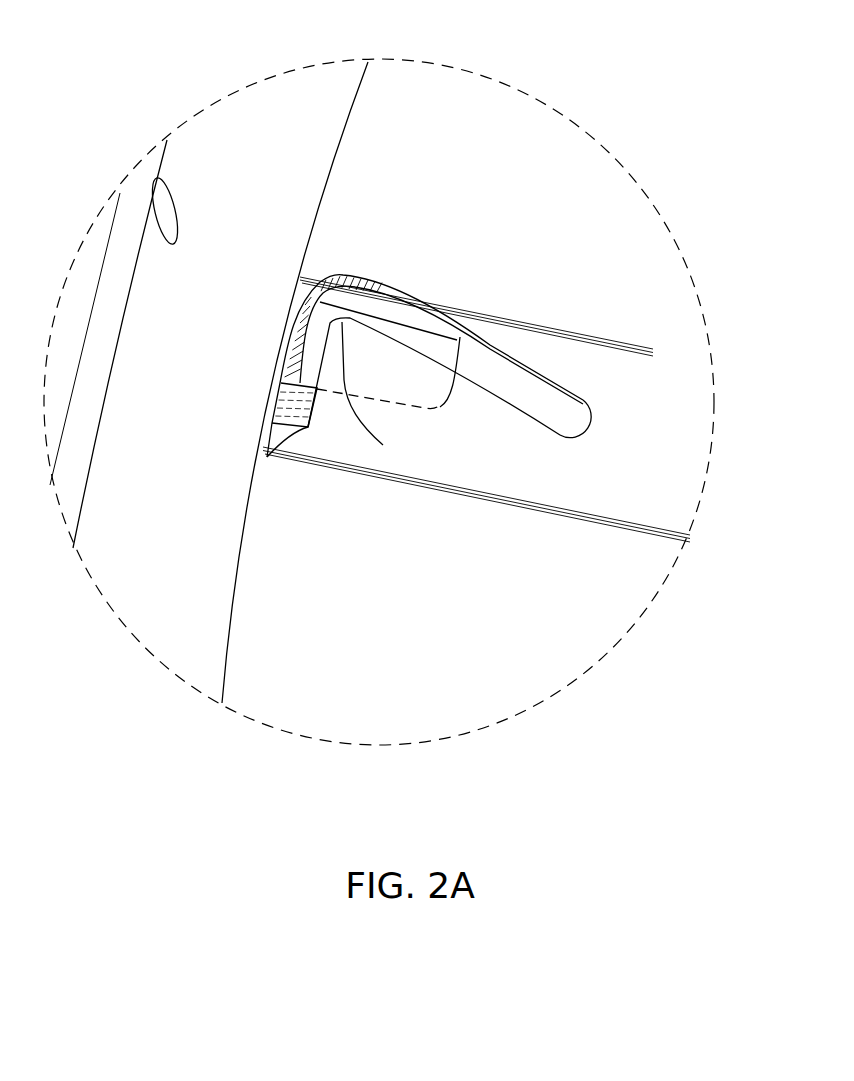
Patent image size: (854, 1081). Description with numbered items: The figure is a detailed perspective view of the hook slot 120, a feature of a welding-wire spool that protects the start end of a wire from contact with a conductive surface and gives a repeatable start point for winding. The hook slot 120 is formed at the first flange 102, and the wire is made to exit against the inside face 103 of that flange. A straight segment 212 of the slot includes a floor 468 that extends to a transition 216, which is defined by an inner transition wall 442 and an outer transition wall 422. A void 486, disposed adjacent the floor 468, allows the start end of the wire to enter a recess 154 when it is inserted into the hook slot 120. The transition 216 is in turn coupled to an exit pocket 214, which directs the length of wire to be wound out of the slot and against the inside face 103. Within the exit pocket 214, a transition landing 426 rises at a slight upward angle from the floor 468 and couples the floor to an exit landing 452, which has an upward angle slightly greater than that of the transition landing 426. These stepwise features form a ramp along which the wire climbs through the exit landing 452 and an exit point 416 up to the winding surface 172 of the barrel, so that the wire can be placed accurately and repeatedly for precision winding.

The first flange 102 is at (118, 252).
The inside face 103 is at (213, 152).
The hook slot 120 is at (443, 208).
The recess 154 is at (437, 350).
The winding surface 172 is at (605, 233).
The straight segment 212 is at (502, 342).
The exit pocket 214 is at (272, 387).
The transition 216 is at (298, 278).
The exit point 416 is at (268, 458).
The outer transition wall 422 is at (350, 277).
The transition landing 426 is at (310, 363).
The inner transition wall 442 is at (381, 390).
The exit landing 452 is at (307, 410).
The floor 468 is at (552, 410).
The void 486 is at (410, 339).